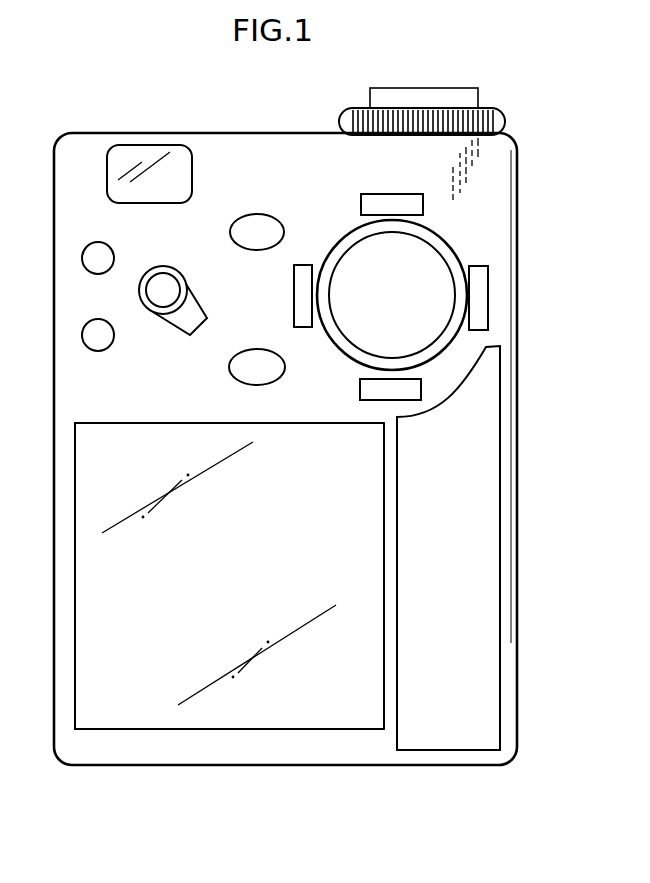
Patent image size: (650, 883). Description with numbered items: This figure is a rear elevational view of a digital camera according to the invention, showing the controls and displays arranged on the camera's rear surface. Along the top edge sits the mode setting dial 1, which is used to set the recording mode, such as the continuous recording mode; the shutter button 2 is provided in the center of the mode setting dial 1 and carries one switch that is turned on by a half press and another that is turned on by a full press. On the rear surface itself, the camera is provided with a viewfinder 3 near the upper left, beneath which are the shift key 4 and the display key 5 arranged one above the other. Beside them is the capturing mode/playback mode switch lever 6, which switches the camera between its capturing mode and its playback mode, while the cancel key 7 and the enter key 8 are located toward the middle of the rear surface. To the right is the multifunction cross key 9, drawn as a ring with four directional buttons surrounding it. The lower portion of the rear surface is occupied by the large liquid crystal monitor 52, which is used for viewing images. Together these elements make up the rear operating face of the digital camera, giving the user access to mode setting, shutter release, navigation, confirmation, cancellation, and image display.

The mode setting dial 1 is at (507, 122).
The shutter button 2 is at (410, 88).
The viewfinder 3 is at (148, 155).
The shift key 4 is at (90, 260).
The display key 5 is at (95, 340).
The capturing mode/playback mode switch lever 6 is at (163, 317).
The cancel key 7 is at (265, 242).
The enter key 8 is at (275, 367).
The multifunction cross key 9 is at (306, 285).
The liquid crystal monitor 52 is at (75, 502).